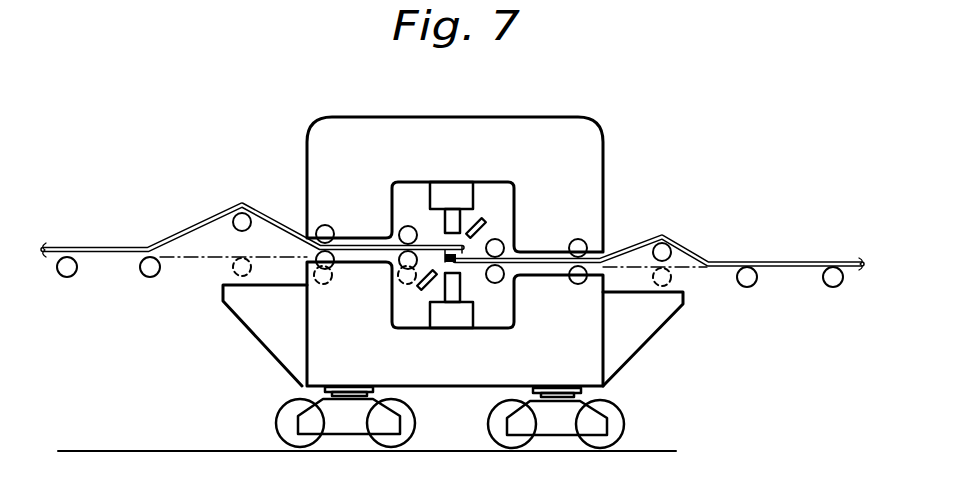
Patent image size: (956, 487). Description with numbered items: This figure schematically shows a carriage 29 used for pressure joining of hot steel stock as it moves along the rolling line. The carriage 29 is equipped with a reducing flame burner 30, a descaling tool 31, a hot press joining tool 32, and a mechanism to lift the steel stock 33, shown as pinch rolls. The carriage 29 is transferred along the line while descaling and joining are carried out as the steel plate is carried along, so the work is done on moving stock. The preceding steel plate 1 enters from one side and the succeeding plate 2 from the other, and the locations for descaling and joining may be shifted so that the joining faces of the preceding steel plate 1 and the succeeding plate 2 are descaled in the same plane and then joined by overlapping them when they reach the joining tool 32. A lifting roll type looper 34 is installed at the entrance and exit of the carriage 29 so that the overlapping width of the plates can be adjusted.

The preceding steel plate 1 is at (713, 258).
The succeeding steel plate 2 is at (102, 257).
The carriage 29 is at (592, 362).
The reducing flame burner 30 is at (482, 220).
The descaling tool 31 is at (455, 263).
The hot press joining tool 32 is at (450, 205).
The mechanism to lift the steel stock 33 is at (410, 267).
The lifting roll type looper 34 is at (241, 212).